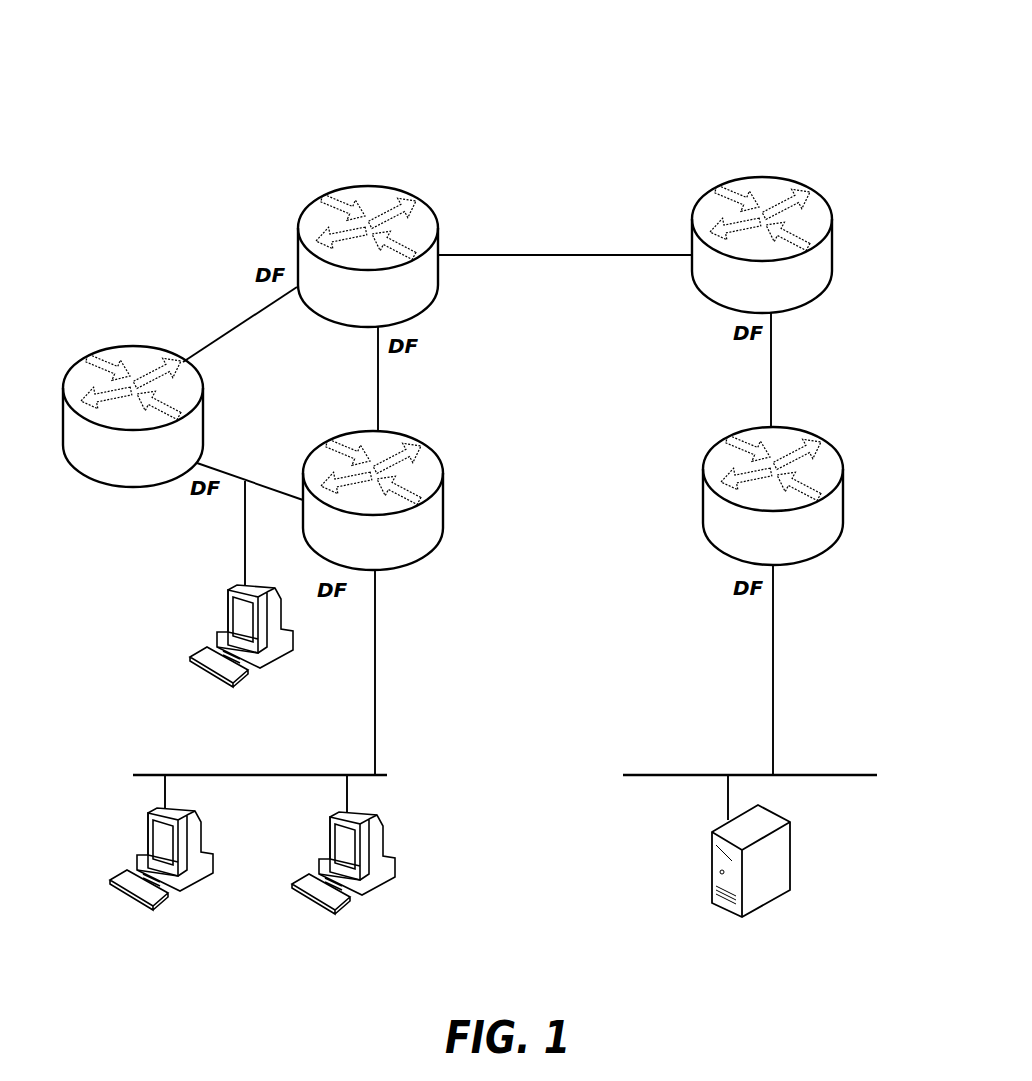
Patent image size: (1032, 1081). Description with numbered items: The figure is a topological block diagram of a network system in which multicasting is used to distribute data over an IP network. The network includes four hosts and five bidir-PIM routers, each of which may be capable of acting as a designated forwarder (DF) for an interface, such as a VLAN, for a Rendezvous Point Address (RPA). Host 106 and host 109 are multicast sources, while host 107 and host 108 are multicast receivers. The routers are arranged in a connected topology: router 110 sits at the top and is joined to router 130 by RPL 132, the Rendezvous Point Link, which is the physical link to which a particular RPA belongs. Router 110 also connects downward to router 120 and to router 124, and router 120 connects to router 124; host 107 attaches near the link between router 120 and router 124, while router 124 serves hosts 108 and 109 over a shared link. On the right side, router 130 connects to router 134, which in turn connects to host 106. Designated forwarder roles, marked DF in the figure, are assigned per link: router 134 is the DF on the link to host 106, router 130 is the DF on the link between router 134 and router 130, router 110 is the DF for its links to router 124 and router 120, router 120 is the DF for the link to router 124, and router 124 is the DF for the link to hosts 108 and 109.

The router 110 is at (349, 306).
The router 120 is at (114, 470).
The router 124 is at (354, 552).
The router 130 is at (743, 297).
The router 134 is at (754, 542).
The Rendezvous Point Link (RPL) 132 is at (652, 222).
The host 106 is at (743, 886).
The host 107 is at (252, 651).
The host 108 is at (171, 871).
The host 109 is at (343, 889).